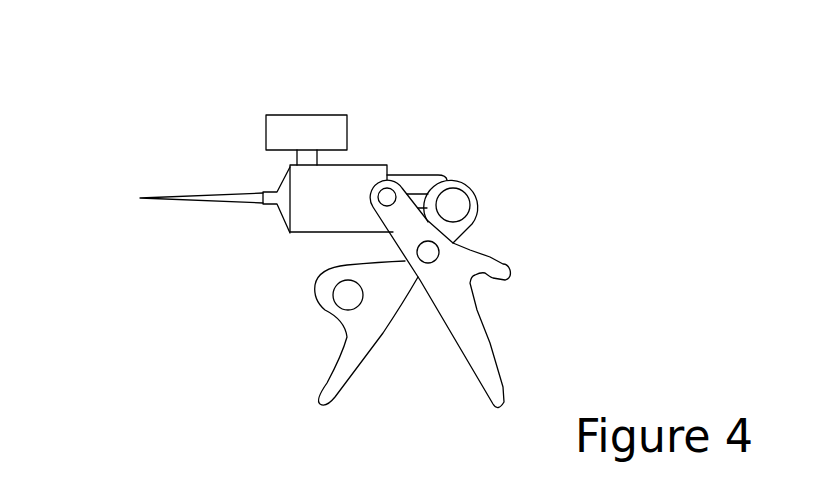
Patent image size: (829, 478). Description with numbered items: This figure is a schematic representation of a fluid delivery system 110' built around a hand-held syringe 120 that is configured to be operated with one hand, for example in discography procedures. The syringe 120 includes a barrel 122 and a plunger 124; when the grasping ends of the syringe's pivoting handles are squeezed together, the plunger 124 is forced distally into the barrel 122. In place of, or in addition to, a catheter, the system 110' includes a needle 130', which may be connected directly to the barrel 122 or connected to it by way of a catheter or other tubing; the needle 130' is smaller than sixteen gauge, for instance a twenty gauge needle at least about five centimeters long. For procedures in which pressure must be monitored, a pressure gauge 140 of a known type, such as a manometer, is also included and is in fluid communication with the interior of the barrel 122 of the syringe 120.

The fluid delivery system 110' is at (283, 213).
The syringe 120 is at (398, 135).
The barrel 122 is at (296, 233).
The plunger 124 is at (421, 176).
The needle 130' is at (187, 228).
The pressure gauge 140 is at (307, 122).